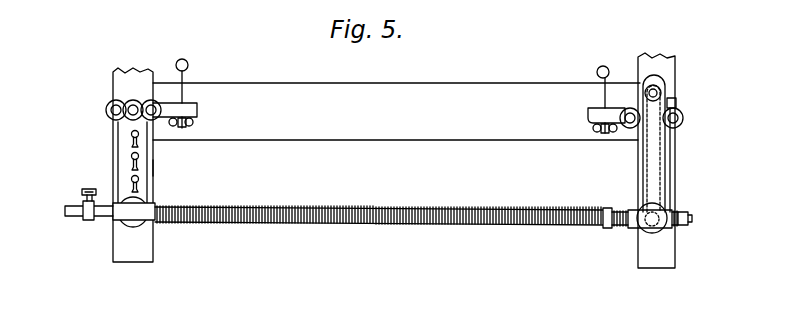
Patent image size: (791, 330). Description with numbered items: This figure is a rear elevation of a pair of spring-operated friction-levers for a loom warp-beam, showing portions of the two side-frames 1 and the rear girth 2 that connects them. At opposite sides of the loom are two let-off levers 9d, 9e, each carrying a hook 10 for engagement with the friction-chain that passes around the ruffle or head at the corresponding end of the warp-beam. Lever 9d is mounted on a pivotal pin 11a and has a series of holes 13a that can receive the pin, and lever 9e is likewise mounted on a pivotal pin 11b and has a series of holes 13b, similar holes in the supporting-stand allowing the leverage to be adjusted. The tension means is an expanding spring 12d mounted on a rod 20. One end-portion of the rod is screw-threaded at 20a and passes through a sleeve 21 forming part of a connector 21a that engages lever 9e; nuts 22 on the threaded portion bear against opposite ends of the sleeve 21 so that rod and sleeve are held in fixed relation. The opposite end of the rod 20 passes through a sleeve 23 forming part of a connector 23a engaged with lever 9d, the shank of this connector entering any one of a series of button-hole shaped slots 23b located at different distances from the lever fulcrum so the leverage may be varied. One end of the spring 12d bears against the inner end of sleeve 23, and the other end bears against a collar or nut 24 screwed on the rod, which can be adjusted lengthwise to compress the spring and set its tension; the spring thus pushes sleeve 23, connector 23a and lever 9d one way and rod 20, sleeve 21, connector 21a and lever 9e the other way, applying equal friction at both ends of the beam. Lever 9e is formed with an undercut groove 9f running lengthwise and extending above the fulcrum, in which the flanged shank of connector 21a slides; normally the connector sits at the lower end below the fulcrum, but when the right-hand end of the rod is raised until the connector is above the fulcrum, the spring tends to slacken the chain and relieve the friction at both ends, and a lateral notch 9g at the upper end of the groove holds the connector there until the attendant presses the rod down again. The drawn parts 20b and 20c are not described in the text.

The side-frame 1 is at (112, 248).
The rear girth 2 is at (432, 83).
The let-off lever 9d is at (125, 145).
The let-off lever 9e is at (671, 167).
The undercut groove 9f is at (657, 157).
The lateral notch 9g is at (656, 85).
The hook 10 is at (190, 65).
The pivotal pin 11a is at (132, 100).
The pivotal pin 11b is at (668, 97).
The spring 12d is at (312, 207).
The holes 13a is at (163, 62).
The holes 13b is at (631, 108).
The rod 20 is at (66, 212).
The screw-threaded portion 20a is at (690, 215).
The nut 20b is at (88, 220).
The set screw 20c is at (88, 188).
The sleeve 21 is at (635, 230).
The connector 21a is at (652, 233).
The nuts 22 is at (627, 212).
The sleeve 23 is at (157, 220).
The connector 23a is at (134, 226).
The button-hole shaped slots 23b is at (153, 168).
The collar or nut 24 is at (607, 230).